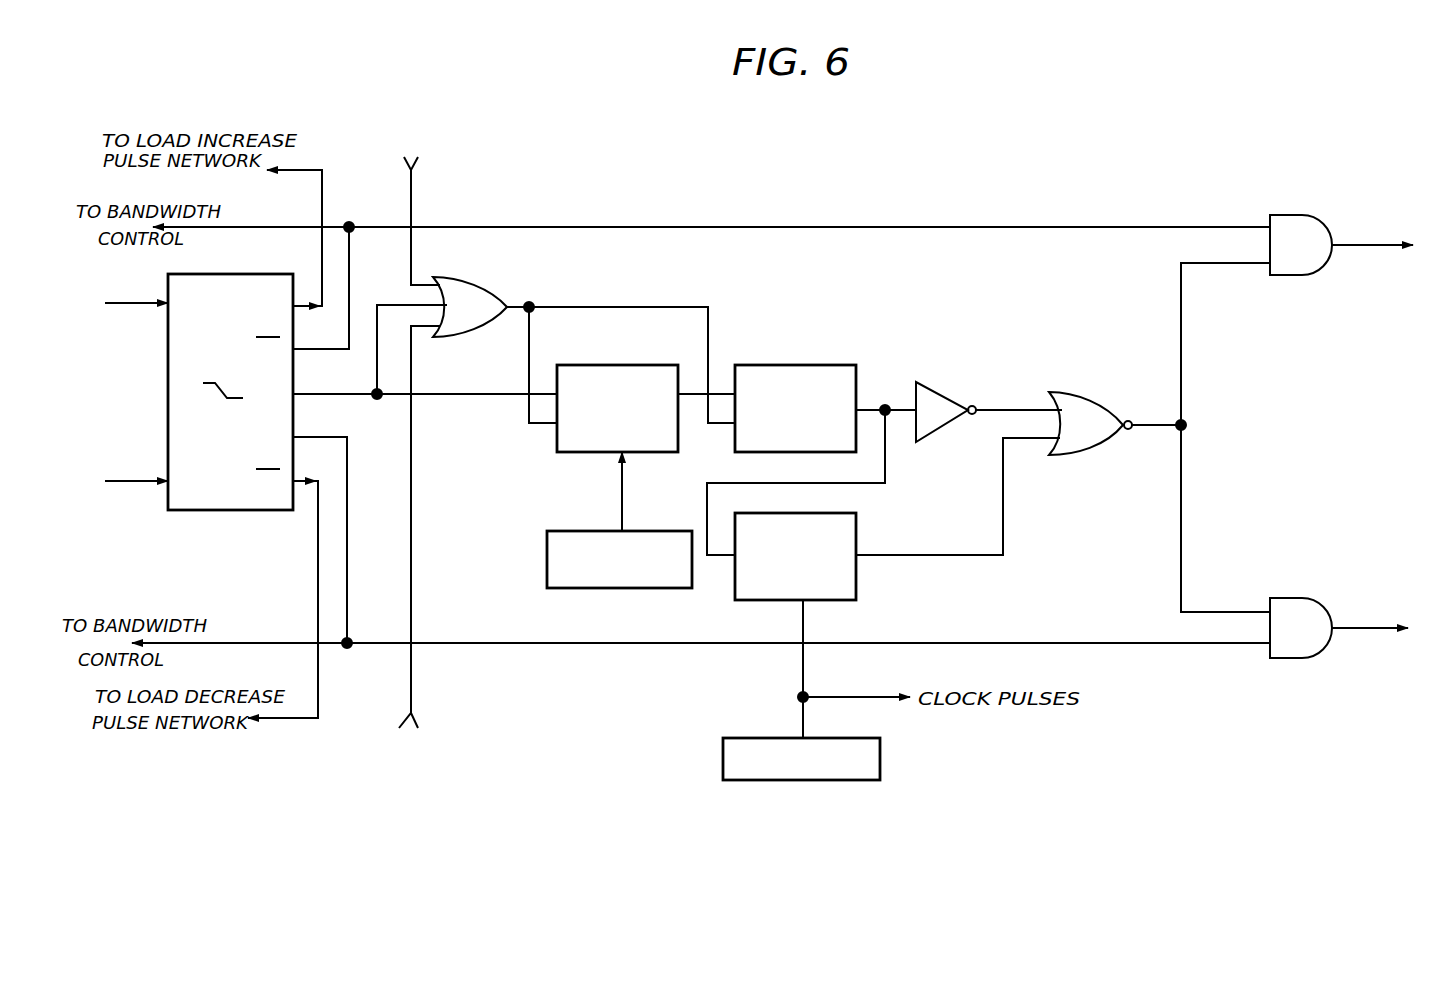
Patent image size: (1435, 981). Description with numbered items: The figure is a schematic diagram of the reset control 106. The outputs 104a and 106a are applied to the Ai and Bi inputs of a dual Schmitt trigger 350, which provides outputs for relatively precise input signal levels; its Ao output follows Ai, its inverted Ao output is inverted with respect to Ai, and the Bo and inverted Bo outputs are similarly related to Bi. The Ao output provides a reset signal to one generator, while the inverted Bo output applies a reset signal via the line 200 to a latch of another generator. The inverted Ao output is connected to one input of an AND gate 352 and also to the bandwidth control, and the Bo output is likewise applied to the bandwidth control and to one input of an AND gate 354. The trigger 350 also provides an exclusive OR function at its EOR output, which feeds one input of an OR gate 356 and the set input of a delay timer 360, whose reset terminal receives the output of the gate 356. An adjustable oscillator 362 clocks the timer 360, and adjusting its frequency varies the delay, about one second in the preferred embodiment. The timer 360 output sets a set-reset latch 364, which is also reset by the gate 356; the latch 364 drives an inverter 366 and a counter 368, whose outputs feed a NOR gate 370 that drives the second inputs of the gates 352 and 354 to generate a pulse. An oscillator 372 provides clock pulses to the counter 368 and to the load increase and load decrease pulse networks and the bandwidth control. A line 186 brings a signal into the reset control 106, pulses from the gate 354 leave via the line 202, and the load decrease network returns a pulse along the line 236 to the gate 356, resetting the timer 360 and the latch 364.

The reset control 106 is at (824, 181).
The output 104a is at (128, 303).
The output 106a is at (128, 481).
The line 186 is at (411, 207).
The line 200 is at (318, 677).
The line 202 is at (1372, 628).
The line 236 is at (408, 676).
The dual Schmitt trigger 350 is at (237, 510).
The AND gate 352 is at (1328, 257).
The AND gate 354 is at (1310, 603).
The OR gate 356 is at (493, 292).
The delay timer 360 is at (627, 365).
The adjustable oscillator 362 is at (547, 560).
The set-reset latch 364 is at (855, 365).
The inverter 366 is at (947, 393).
The counter 368 is at (856, 527).
The NOR gate 370 is at (1108, 442).
The oscillator 372 is at (1363, 243).